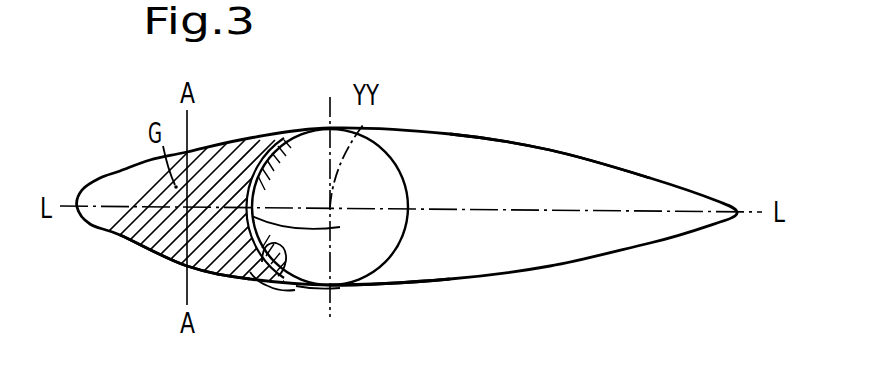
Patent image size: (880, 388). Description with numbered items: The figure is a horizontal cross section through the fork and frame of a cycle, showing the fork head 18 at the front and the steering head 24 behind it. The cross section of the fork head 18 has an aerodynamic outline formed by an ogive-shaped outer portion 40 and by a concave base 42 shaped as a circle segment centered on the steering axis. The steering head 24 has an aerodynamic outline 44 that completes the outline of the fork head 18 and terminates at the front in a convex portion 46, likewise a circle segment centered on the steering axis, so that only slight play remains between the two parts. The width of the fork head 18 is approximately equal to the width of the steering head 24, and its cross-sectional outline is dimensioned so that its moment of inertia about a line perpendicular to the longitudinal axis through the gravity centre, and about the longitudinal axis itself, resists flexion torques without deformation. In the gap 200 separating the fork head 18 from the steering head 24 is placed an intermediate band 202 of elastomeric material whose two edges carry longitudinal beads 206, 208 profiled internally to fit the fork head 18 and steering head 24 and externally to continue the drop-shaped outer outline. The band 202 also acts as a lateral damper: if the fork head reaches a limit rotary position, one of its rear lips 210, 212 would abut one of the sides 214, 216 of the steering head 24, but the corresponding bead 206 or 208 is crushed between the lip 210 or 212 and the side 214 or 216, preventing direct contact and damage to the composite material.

The fork head 18 is at (163, 264).
The steering head 24 is at (353, 293).
The ogive-shaped outer portion 40 is at (124, 174).
The concave base 42 is at (235, 142).
The aerodynamic outline 44 is at (553, 147).
The convex portion 46 is at (272, 282).
The gap 200 is at (261, 190).
The band 202 is at (319, 233).
The longitudinal bead 206 is at (283, 277).
The longitudinal bead 208 is at (272, 142).
The rear lip 210 is at (250, 138).
The rear lip 212 is at (253, 280).
The side 214 is at (370, 125).
The side 216 is at (361, 288).